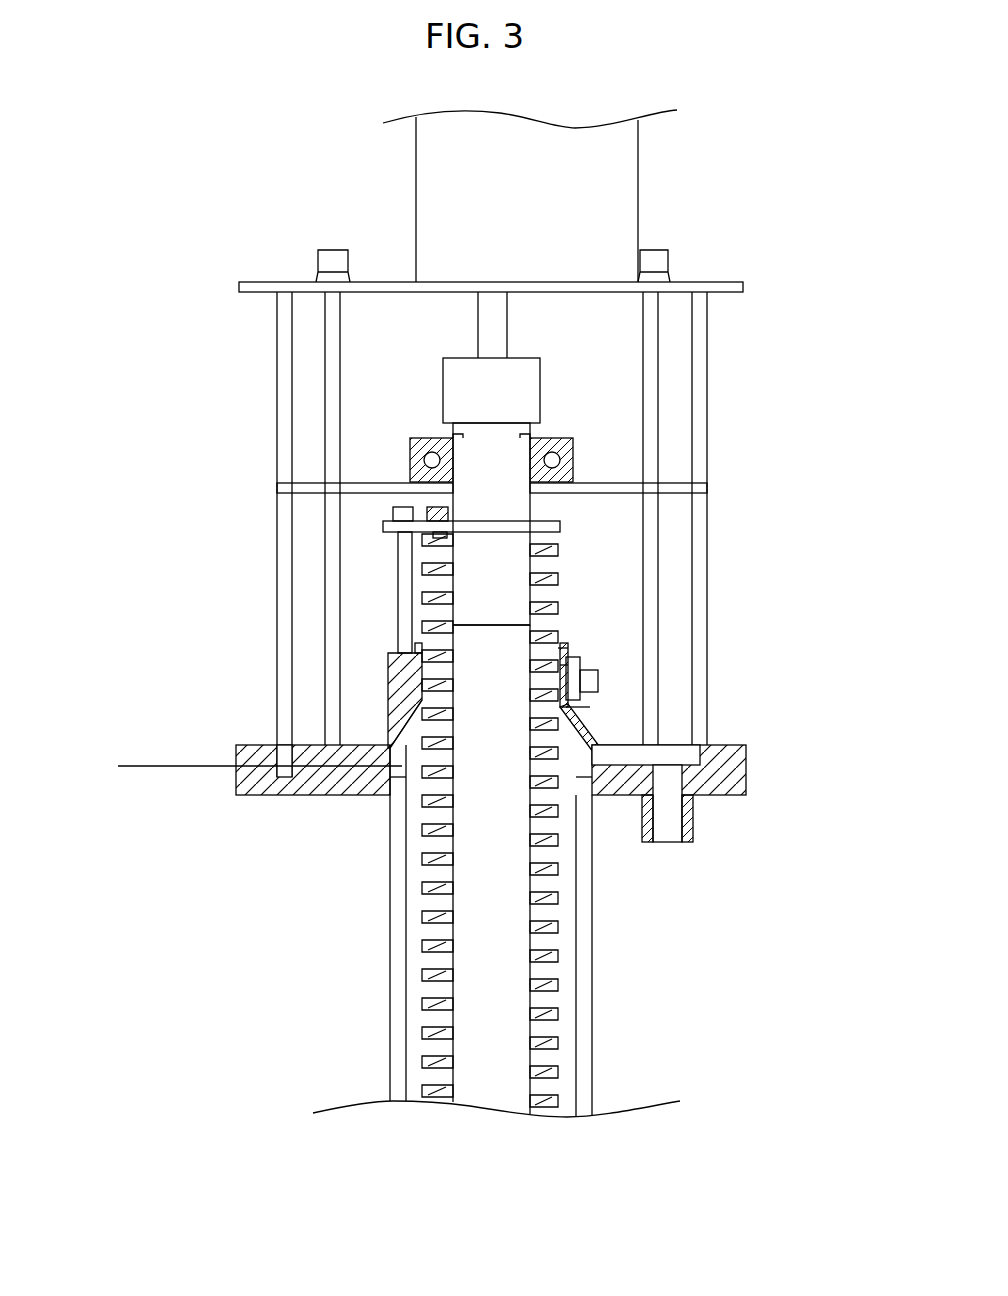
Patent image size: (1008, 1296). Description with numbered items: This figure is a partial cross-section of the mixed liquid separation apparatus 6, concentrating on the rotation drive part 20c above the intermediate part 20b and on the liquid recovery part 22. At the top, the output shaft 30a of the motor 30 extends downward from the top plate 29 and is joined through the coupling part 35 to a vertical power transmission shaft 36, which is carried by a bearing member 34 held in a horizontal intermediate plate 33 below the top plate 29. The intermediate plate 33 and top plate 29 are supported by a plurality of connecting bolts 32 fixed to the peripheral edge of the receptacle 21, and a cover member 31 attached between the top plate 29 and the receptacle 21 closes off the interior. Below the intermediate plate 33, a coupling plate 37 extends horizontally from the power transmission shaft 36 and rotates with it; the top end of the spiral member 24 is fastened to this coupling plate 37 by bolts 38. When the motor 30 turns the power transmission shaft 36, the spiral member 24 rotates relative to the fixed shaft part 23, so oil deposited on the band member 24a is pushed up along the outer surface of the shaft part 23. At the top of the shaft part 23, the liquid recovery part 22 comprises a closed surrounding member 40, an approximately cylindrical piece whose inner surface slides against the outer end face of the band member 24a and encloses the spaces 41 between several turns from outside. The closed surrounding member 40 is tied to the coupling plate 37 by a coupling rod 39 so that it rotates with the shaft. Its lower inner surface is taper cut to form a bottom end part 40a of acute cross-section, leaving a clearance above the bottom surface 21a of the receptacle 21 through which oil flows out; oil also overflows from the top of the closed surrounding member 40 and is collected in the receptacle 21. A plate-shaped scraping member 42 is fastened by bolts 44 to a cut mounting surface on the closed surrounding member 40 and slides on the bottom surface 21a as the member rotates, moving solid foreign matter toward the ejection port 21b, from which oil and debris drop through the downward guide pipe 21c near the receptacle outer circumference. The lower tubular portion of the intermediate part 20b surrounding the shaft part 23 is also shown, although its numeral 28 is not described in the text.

The mixed liquid separation apparatus 6 is at (520, 215).
The intermediate part 20b is at (493, 931).
The rotation drive part 20c is at (479, 259).
The receptacle 21 is at (479, 790).
The bottom surface of receptacle 21a is at (137, 766).
The ejection port 21b is at (672, 782).
The guide pipe 21c is at (688, 821).
The liquid recovery part 22 is at (492, 685).
The shaft part 23 is at (483, 1015).
The spiral member 24 is at (545, 1118).
The band member 24a is at (555, 608).
The guide tube 28 is at (593, 960).
The top plate 29 is at (743, 286).
The motor 30 is at (623, 173).
The output shaft 30a is at (500, 327).
The cover member 31 is at (700, 392).
The connecting bolts 32 is at (330, 552).
The intermediate plate 33 is at (345, 488).
The bearing member 34 is at (570, 455).
The coupling part 35 is at (527, 393).
The power transmission shaft 36 is at (481, 590).
The coupling plate 37 is at (560, 527).
The bolts 38 is at (435, 512).
The coupling rod 39 is at (400, 612).
The closed surrounding member 40 is at (492, 697).
The bottom end part 40a is at (388, 745).
The spaces 41 is at (569, 667).
The scraping member 42 is at (580, 672).
The bolts 44 is at (590, 683).